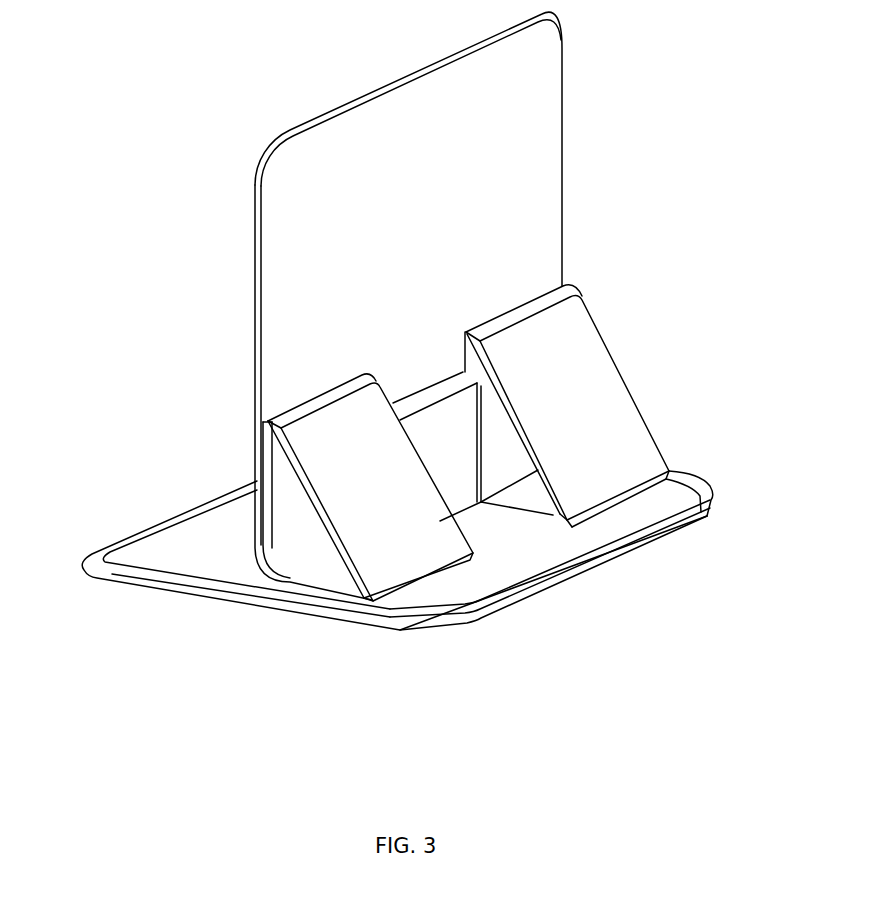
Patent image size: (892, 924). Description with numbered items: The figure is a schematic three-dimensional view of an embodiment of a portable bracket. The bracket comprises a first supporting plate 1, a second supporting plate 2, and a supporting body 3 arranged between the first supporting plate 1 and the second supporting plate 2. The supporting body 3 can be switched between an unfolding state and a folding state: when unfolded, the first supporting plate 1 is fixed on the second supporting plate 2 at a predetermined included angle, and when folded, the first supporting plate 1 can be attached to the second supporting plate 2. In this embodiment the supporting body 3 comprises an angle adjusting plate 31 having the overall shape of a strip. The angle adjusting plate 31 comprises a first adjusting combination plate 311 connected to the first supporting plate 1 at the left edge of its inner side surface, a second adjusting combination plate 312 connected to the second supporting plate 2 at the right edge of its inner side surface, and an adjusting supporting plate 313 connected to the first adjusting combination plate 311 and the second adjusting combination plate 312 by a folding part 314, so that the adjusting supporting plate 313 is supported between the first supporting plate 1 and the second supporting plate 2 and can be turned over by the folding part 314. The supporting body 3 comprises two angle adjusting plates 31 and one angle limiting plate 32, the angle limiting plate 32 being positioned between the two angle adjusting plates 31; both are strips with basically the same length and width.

The first supporting plate 1 is at (327, 117).
The second supporting plate 2 is at (153, 525).
The supporting body 3 is at (453, 508).
The angle adjusting plate 31 is at (710, 512).
The angle limiting plate 32 is at (447, 478).
The first adjusting combination plate 311 is at (270, 488).
The second adjusting combination plate 312 is at (432, 603).
The adjusting supporting plate 313 is at (365, 512).
The folding part 314 is at (307, 405).